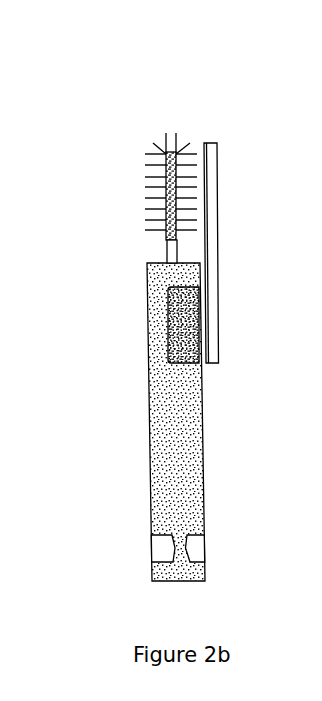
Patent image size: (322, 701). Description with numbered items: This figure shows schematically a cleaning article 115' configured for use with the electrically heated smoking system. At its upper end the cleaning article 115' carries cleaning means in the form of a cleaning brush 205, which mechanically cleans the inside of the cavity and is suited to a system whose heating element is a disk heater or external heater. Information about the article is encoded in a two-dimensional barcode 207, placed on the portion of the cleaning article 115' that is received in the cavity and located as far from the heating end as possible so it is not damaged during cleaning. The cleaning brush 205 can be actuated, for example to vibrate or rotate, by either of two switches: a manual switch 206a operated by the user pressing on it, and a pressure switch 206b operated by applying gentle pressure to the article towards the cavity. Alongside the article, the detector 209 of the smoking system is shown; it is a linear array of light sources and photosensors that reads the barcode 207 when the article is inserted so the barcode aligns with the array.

The cleaning article 115' is at (208, 95).
The cleaning brush 205 is at (131, 154).
The pressure switch 206b is at (166, 253).
The two-dimensional barcode 207 is at (166, 322).
The detector 209 is at (233, 211).
The manual switch 206a is at (152, 550).